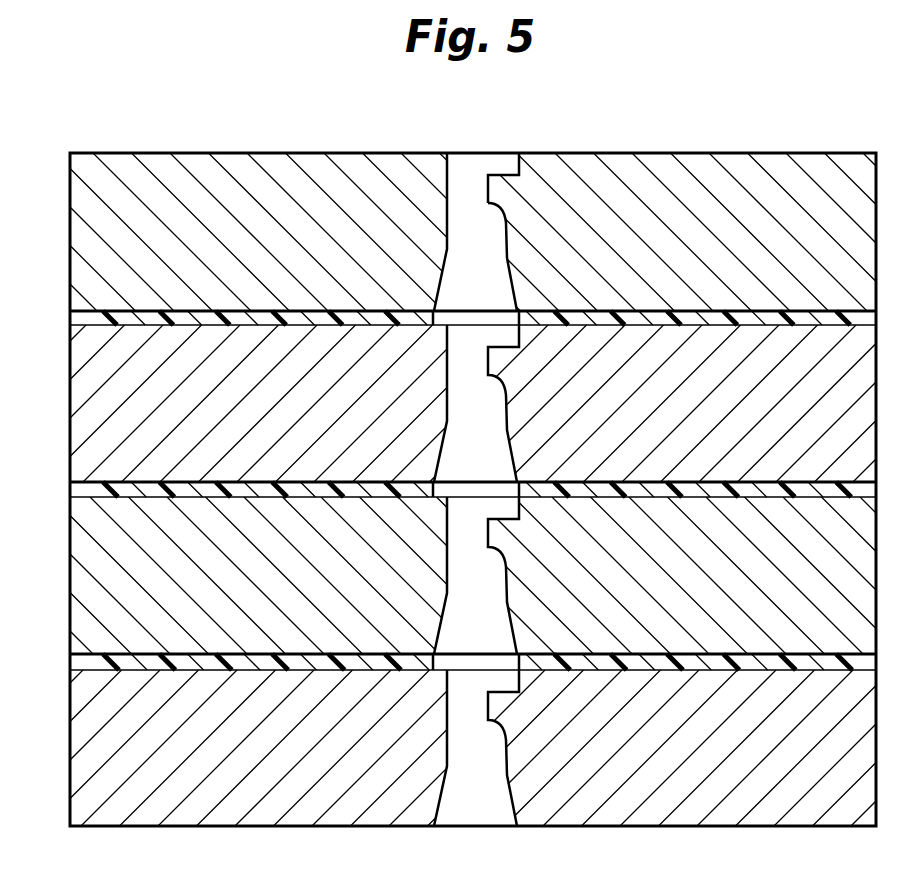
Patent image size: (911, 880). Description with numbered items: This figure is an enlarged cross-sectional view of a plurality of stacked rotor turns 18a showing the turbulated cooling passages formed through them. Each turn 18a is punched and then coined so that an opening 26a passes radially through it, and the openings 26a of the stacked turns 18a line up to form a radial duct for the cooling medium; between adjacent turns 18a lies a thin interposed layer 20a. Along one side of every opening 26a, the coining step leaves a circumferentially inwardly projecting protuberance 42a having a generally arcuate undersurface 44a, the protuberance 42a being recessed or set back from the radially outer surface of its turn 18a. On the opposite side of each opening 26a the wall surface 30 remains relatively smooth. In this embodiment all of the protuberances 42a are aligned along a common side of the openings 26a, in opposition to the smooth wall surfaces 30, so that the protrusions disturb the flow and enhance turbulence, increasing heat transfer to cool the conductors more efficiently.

The turn 18a is at (163, 173).
The bonding layer 20a is at (122, 320).
The opening 26a is at (470, 202).
The opposite wall 30 is at (447, 234).
The protuberance 42a is at (497, 188).
The arcuate undersurface 44a is at (504, 233).